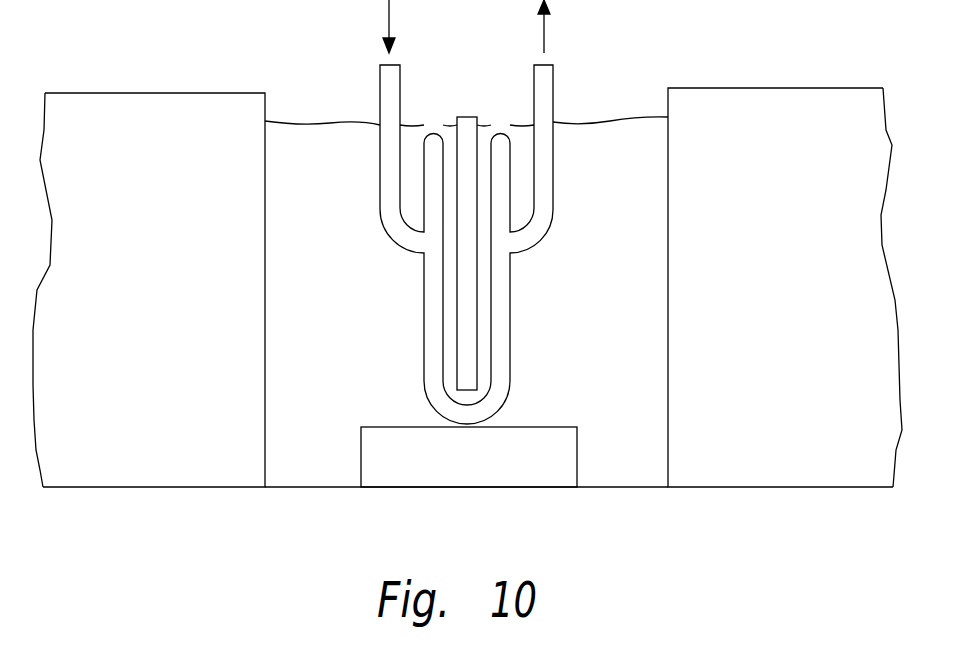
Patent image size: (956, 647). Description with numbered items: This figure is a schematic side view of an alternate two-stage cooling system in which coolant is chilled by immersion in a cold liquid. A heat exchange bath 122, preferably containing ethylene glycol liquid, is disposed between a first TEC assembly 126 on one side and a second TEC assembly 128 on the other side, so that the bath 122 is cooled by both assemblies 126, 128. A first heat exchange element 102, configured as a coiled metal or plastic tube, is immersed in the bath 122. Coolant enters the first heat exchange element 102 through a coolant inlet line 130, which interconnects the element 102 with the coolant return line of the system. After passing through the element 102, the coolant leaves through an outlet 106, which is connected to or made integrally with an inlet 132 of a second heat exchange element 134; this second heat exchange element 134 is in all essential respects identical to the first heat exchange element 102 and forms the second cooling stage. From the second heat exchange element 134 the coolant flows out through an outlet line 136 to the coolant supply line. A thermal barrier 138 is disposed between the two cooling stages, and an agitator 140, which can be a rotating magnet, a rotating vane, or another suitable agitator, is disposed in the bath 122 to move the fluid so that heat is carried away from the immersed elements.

The heat exchange element 102 is at (430, 128).
The outlet 106 is at (426, 400).
The heat exchange bath 122 is at (282, 121).
The TEC assembly 126 is at (102, 93).
The TEC assembly 128 is at (800, 88).
The coolant inlet line 130 is at (380, 88).
The inlet 132 is at (509, 398).
The second heat exchange element 134 is at (510, 310).
The outlet line 136 is at (553, 83).
The thermal barrier 138 is at (472, 115).
The agitator 140 is at (470, 477).